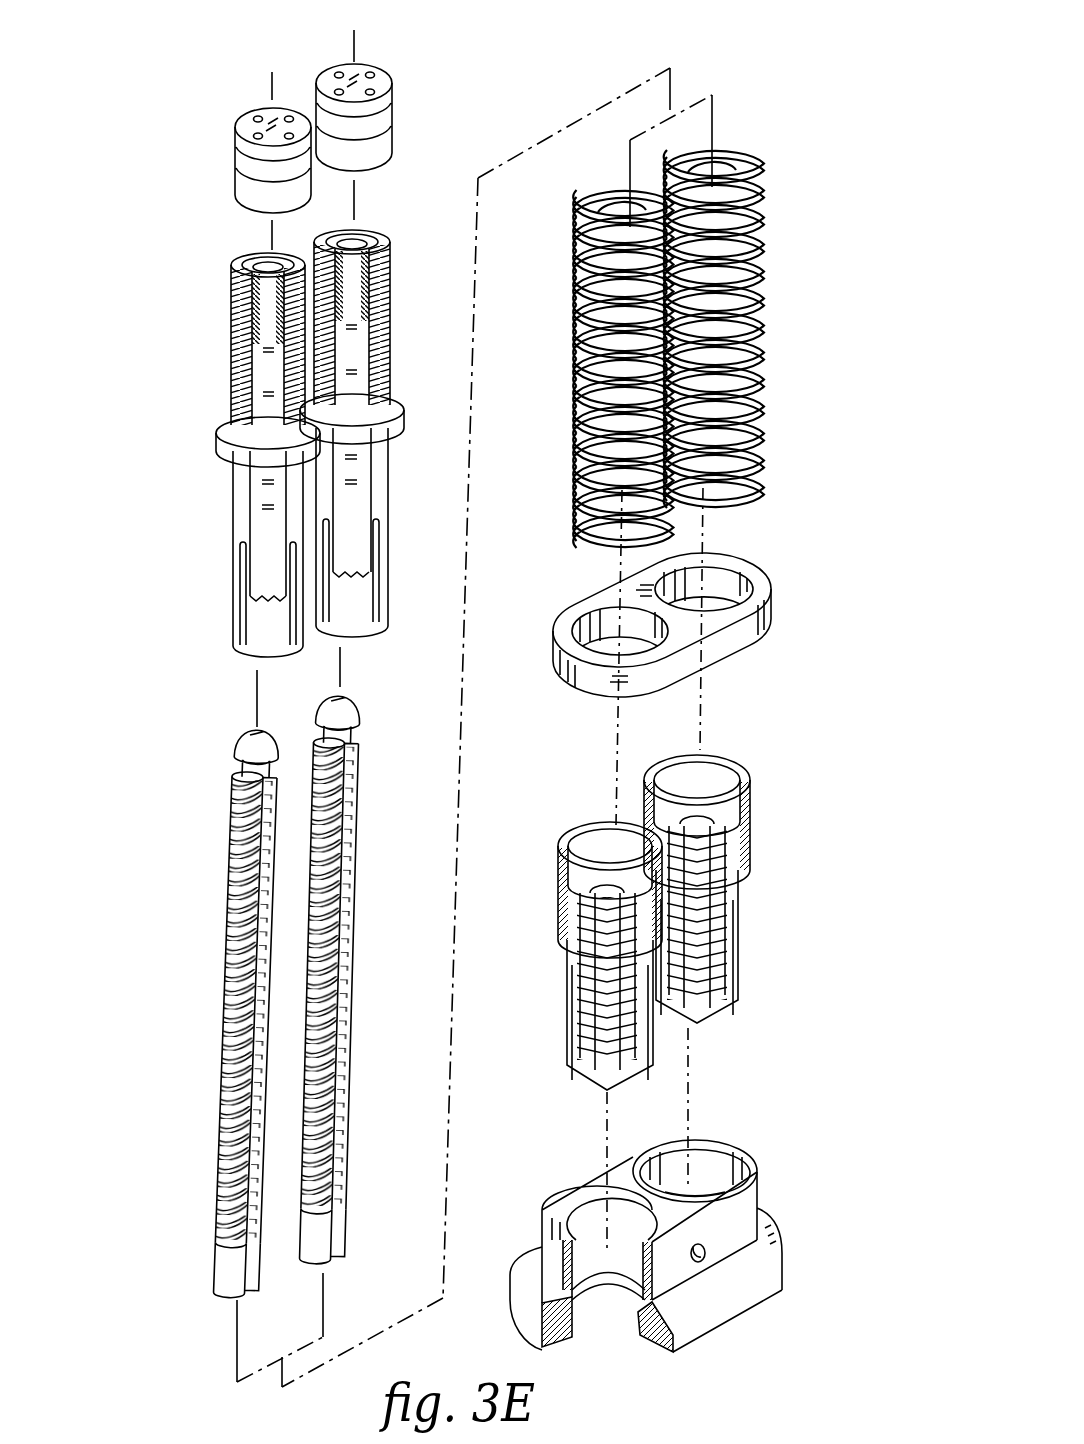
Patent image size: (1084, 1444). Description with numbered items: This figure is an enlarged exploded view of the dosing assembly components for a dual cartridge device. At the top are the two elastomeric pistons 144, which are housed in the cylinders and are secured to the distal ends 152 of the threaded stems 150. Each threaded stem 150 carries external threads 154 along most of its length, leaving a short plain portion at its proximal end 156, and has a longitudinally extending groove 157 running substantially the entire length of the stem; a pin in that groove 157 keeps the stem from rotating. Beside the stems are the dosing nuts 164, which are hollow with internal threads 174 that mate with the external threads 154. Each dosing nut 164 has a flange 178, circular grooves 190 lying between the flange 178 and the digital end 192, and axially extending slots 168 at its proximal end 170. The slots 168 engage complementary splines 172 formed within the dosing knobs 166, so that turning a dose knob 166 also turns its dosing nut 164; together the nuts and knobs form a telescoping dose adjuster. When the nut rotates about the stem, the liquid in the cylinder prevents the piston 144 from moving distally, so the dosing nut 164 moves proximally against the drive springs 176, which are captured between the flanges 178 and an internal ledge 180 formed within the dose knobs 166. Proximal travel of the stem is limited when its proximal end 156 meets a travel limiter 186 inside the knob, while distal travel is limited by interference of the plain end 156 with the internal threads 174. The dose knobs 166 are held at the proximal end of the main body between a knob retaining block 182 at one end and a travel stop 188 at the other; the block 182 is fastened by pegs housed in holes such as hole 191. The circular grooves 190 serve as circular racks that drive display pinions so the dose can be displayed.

The elastomeric piston 144 is at (388, 78).
The threaded stem 150 is at (212, 1082).
The distal end 152 is at (236, 746).
The external threads 154 is at (230, 970).
The proximal end 156 is at (225, 1262).
The longitudinally extending groove 157 is at (346, 1002).
The dosing nut 164 is at (218, 511).
The dosing knob 166 is at (757, 884).
The axially extending slot 168 is at (230, 612).
The proximal end 170 is at (250, 657).
The spline 172 is at (735, 832).
The internal threads 174 is at (354, 243).
The drive spring 176 is at (756, 266).
The flange 178 is at (402, 430).
The internal ledge 180 is at (590, 845).
The knob retaining block 182 is at (782, 1165).
The travel limiter 186 is at (702, 828).
The travel stop 188 is at (773, 592).
The circular groove 190 is at (231, 333).
The hole 191 is at (704, 1256).
The digital end 192 is at (236, 270).